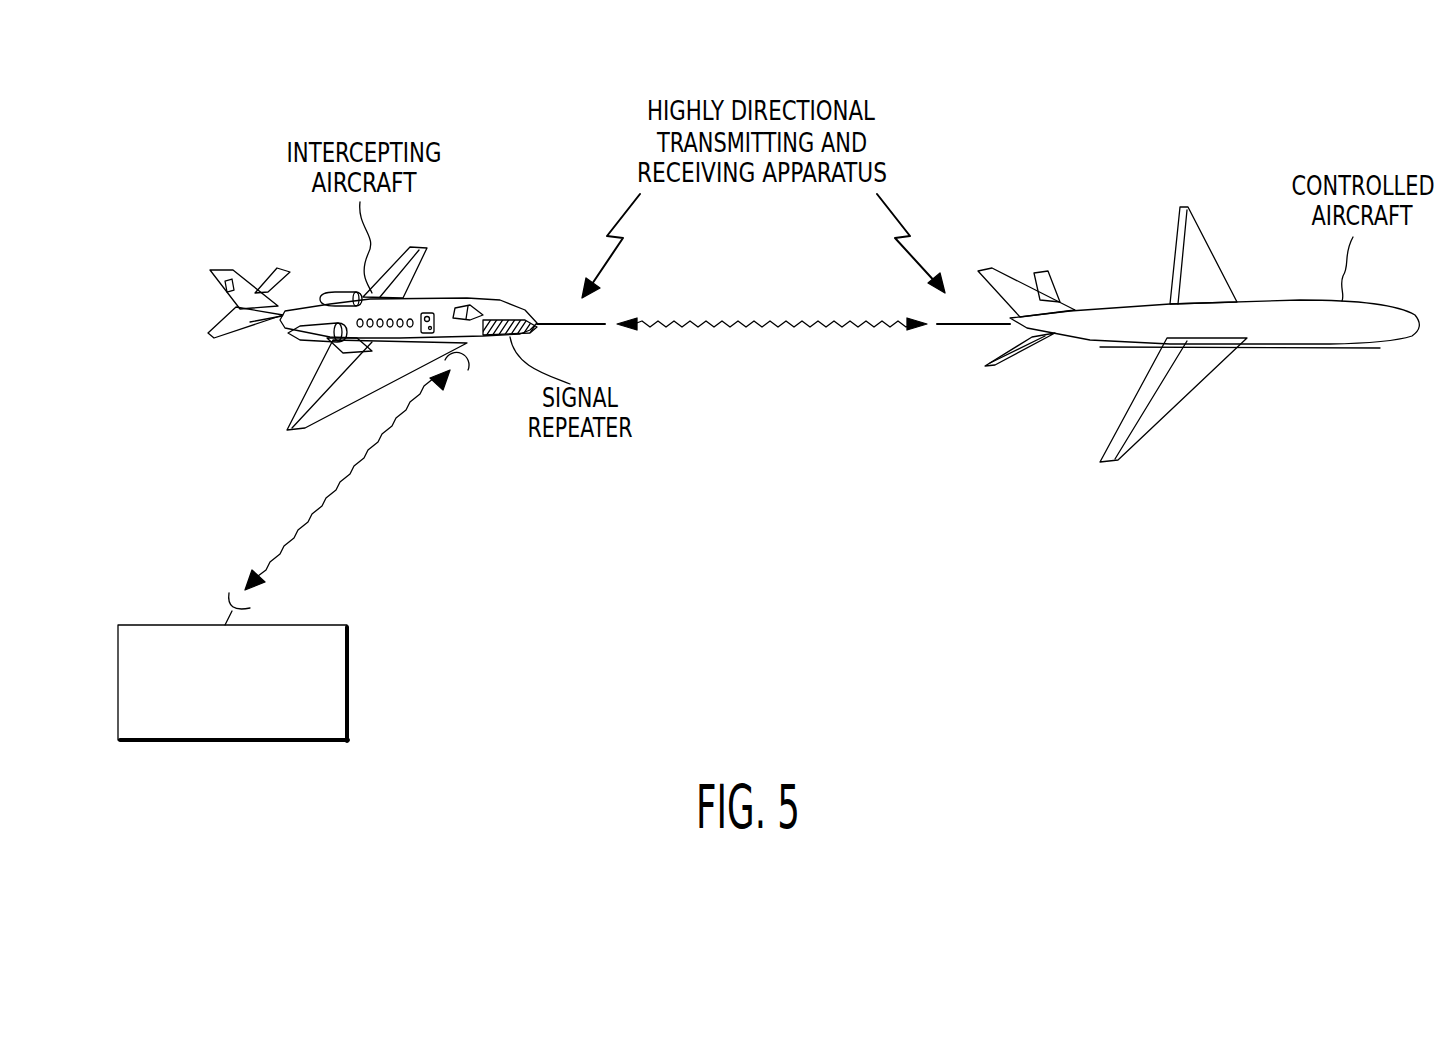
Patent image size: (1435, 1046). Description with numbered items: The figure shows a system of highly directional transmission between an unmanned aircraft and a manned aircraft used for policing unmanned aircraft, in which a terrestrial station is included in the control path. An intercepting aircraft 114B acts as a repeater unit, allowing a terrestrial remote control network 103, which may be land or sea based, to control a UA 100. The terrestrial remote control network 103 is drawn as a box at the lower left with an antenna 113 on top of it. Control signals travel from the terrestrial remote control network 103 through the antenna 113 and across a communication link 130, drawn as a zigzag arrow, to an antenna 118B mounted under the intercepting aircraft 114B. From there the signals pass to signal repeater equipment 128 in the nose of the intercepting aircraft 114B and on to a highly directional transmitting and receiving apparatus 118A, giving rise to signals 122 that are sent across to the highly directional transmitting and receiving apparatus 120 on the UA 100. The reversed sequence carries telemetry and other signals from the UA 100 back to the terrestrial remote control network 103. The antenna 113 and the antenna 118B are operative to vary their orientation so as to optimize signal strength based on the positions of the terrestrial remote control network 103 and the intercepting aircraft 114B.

The UA 100 is at (1303, 347).
The terrestrial remote control network 103 is at (347, 690).
The antenna 113 is at (227, 618).
The intercepting aircraft 114B is at (437, 293).
The highly directional transmitting and receiving apparatus 118A is at (582, 326).
The antenna 118B is at (443, 352).
The highly directional transmitting and receiving apparatus 120 is at (972, 328).
The signals 122 is at (770, 328).
The signal repeater equipment 128 is at (493, 336).
The communication link to terrestrial network 130 is at (333, 505).